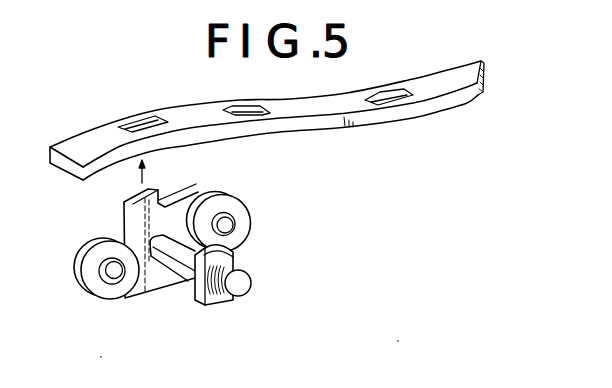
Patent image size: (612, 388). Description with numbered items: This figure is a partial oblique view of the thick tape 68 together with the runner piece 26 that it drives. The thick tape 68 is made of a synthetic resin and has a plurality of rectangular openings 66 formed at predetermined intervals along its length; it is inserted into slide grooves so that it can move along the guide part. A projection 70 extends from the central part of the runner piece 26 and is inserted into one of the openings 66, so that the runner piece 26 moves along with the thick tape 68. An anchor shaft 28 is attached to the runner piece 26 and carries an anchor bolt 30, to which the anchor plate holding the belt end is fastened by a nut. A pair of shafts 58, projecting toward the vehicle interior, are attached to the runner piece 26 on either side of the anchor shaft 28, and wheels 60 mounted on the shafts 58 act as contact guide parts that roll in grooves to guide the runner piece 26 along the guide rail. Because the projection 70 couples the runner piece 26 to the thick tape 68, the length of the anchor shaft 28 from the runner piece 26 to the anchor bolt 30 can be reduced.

The runner piece 26 is at (126, 230).
The anchor shaft 28 is at (187, 279).
The anchor bolt 30 is at (236, 274).
The shafts 58 is at (113, 279).
The wheels 60 is at (232, 201).
The rectangular openings 66 is at (132, 121).
The thick tape 68 is at (333, 103).
The projection 70 is at (153, 193).